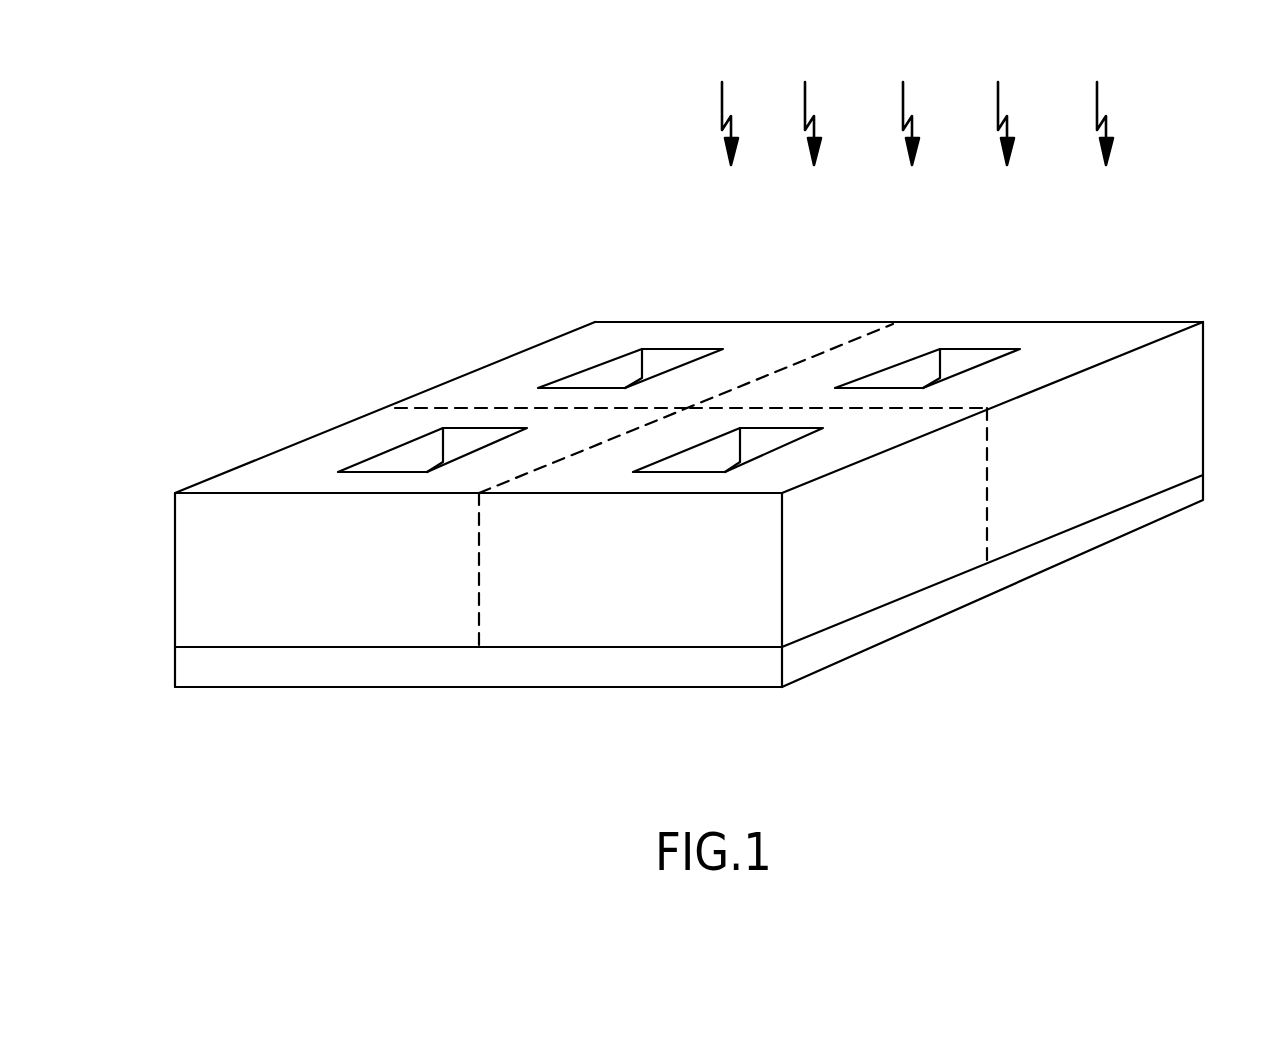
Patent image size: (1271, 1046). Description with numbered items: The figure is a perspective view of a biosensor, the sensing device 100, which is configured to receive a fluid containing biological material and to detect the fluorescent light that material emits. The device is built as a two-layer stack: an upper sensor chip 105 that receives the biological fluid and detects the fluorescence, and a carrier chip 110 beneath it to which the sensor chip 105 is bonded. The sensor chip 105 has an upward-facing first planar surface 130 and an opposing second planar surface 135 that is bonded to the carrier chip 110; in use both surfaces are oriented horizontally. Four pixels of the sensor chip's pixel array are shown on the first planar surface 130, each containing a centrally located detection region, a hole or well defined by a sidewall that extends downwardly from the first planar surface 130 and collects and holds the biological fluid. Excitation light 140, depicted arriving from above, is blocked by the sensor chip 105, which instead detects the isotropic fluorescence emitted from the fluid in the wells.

The sensing device 100 is at (652, 420).
The sensor chip 105 is at (652, 485).
The carrier chip 110 is at (652, 626).
The first planar surface 130 is at (689, 376).
The second planar surface 135 is at (659, 673).
The excitation light 140 is at (910, 108).